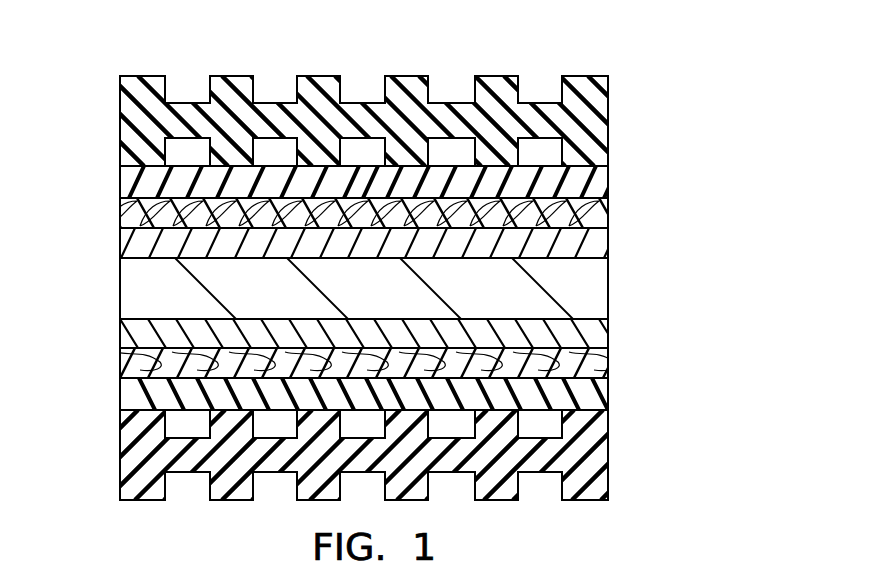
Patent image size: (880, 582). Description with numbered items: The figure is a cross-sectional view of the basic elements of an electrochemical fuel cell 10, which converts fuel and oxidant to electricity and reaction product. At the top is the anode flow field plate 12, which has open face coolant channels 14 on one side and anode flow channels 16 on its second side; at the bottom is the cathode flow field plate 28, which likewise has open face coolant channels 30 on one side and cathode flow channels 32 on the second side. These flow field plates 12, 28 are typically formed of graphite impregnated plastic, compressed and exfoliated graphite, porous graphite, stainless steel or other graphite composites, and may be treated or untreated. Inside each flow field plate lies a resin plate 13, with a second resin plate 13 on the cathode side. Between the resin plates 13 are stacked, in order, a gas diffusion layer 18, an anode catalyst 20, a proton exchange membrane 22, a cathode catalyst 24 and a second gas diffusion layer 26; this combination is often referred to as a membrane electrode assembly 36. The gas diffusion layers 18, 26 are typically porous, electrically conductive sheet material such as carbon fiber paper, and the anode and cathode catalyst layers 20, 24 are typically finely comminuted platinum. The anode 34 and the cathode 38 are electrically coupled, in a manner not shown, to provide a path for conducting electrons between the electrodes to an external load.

The fuel cell 10 is at (658, 70).
The anode flow field plate 12 is at (120, 98).
The resin plate 13 is at (120, 185).
The open face coolant channels 14 is at (263, 85).
The anode flow channels 16 is at (368, 150).
The gas diffusion layer 18 is at (120, 215).
The anode catalyst 20 is at (120, 246).
The proton exchange membrane 22 is at (120, 283).
The cathode catalyst 24 is at (120, 335).
The second gas diffusion layer 26 is at (120, 365).
The cathode flow field plate 28 is at (120, 446).
The open face coolant channels 30 is at (275, 488).
The cathode flow channels 32 is at (460, 430).
The anode 34 is at (628, 157).
The membrane electrode assembly 36 is at (702, 198).
The cathode 38 is at (628, 367).